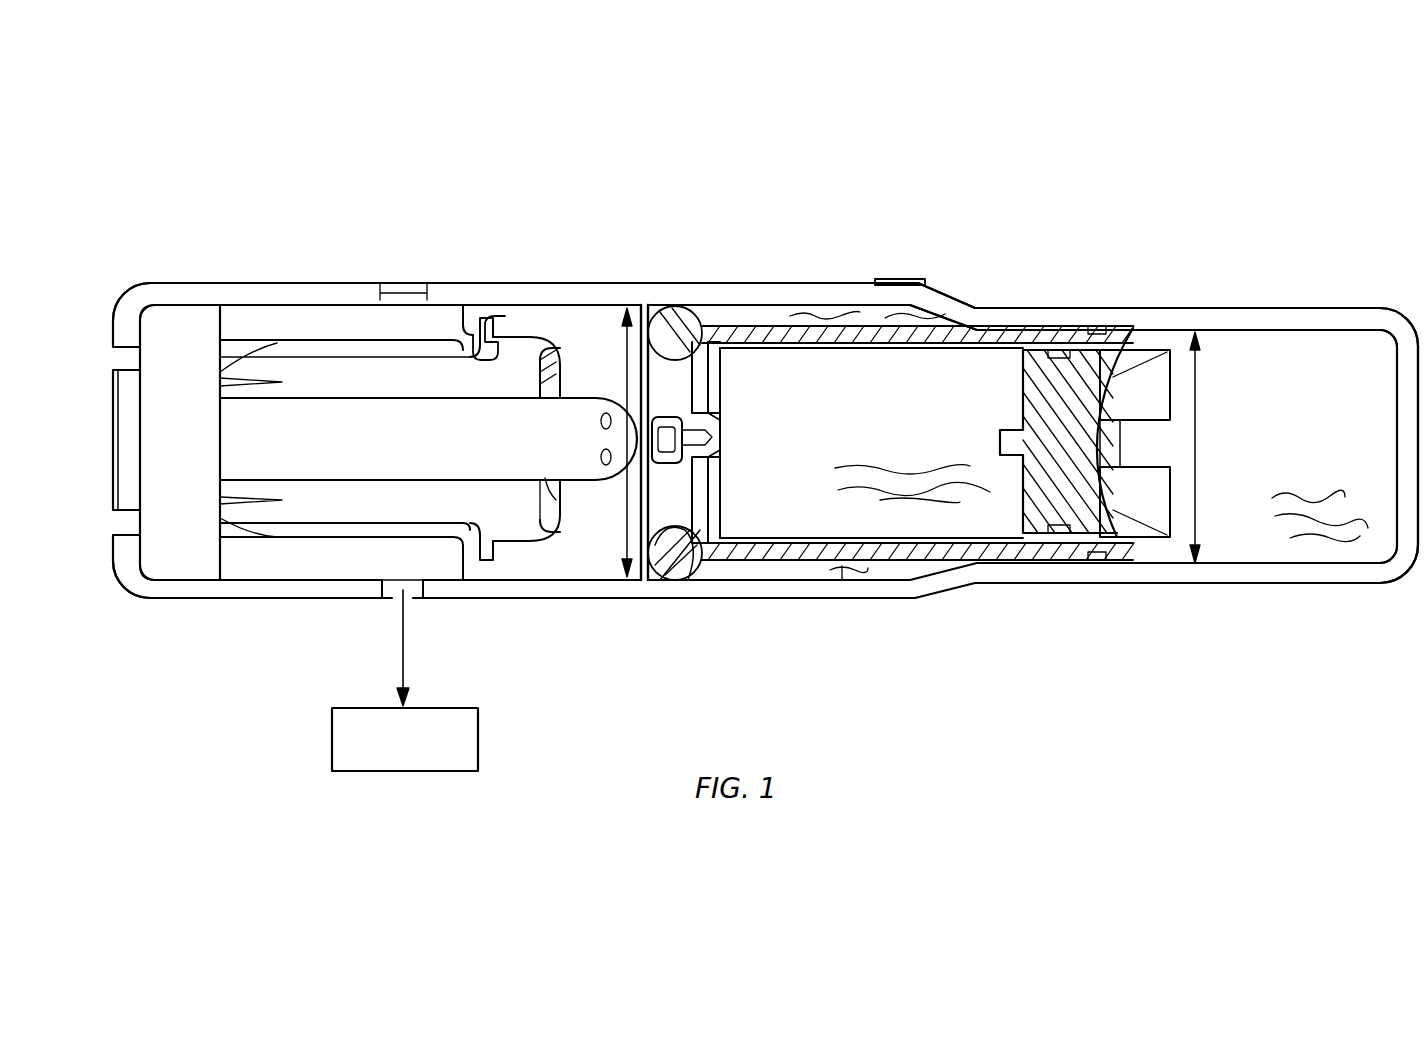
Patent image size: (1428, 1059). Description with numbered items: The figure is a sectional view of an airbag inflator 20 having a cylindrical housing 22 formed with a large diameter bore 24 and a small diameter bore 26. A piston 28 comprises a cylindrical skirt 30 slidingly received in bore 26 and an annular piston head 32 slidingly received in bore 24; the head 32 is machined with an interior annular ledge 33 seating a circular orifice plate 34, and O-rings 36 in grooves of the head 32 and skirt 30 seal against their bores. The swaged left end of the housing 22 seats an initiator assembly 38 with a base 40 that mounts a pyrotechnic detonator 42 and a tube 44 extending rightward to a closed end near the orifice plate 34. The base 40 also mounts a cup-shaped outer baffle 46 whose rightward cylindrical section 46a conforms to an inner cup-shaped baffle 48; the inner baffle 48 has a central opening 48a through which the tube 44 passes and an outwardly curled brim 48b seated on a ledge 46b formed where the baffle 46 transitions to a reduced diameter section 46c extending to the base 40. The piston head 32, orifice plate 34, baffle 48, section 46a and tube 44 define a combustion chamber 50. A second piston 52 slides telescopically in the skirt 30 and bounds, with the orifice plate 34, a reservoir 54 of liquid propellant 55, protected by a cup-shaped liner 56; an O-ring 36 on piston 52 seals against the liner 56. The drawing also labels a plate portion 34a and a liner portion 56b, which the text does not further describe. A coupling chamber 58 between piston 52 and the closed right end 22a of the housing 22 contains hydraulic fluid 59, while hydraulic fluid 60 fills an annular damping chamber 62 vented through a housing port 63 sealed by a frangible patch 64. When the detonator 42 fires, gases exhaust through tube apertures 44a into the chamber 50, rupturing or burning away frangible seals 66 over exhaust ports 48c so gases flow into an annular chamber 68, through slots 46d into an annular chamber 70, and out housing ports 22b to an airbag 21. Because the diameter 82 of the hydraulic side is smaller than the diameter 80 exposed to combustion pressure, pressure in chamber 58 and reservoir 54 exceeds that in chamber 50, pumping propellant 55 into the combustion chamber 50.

The airbag inflator 20 is at (963, 192).
The airbag 21 is at (390, 765).
The cylindrical housing 22 is at (245, 300).
The closed right end 22a is at (1402, 440).
The housing ports 22b is at (420, 590).
The large diameter bore 24 is at (768, 303).
The small diameter bore 26 is at (1247, 578).
The piston 28 is at (887, 565).
The cylindrical skirt 30 is at (782, 562).
The annular piston head 32 is at (698, 303).
The interior annular ledge 33 is at (692, 562).
The circular orifice plate 34 is at (697, 500).
The cup flange 34a is at (697, 412).
The O-rings 36 is at (668, 303).
The initiator assembly 38 is at (180, 540).
The base 40 is at (180, 442).
The pyrotechnic detonator 42 is at (117, 385).
The tube 44 is at (428, 439).
The tube apertures 44a is at (600, 457).
The cup-shaped outer baffle 46 is at (310, 327).
The rightward cylindrical section 46a is at (512, 345).
The ledge 46b is at (465, 358).
The reduced diameter section 46c is at (362, 540).
The slots 46d is at (275, 535).
The inner cup-shaped baffle 48 is at (520, 320).
The central opening 48a is at (553, 478).
The outwardly curled brim 48b is at (482, 535).
The exhaust ports 48c is at (530, 395).
The combustion chamber 50 is at (592, 359).
The second piston 52 is at (1066, 432).
The reservoir 54 is at (848, 470).
The liquid propellant 55 is at (948, 503).
The cup-shaped liner 56 is at (730, 540).
The rupture tab 56b is at (705, 450).
The coupling chamber 58 is at (1300, 450).
The hydraulic fluid 59 is at (1338, 532).
The hydraulic fluid 60 is at (825, 303).
The annular damping chamber 62 is at (842, 582).
The housing port 63 is at (938, 303).
The frangible patch 64 is at (893, 280).
The frangible seals 66 is at (548, 535).
The annular chamber 68 is at (341, 501).
The annular chamber 70 is at (341, 560).
The diameter 80 is at (627, 335).
The diameter 82 is at (1200, 395).